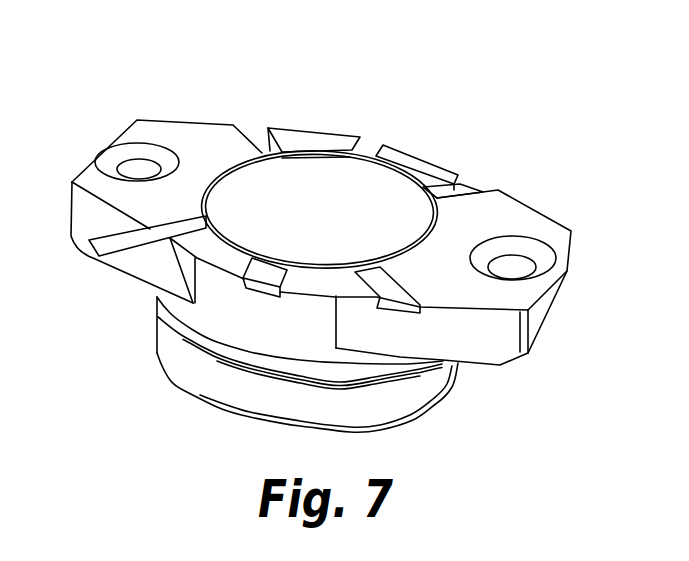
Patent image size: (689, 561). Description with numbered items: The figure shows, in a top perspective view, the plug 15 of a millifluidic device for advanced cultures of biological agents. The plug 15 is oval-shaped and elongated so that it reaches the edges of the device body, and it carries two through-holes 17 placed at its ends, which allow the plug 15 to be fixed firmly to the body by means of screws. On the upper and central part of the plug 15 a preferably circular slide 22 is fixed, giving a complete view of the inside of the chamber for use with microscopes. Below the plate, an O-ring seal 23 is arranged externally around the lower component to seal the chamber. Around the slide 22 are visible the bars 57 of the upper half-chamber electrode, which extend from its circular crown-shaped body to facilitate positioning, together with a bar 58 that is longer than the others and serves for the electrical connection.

The plug 15 is at (317, 222).
The through-hole 17 is at (517, 250).
The slide 22 is at (307, 197).
The O-ring seal 23 is at (218, 350).
The bar 57 is at (373, 279).
The bar 58 is at (107, 245).